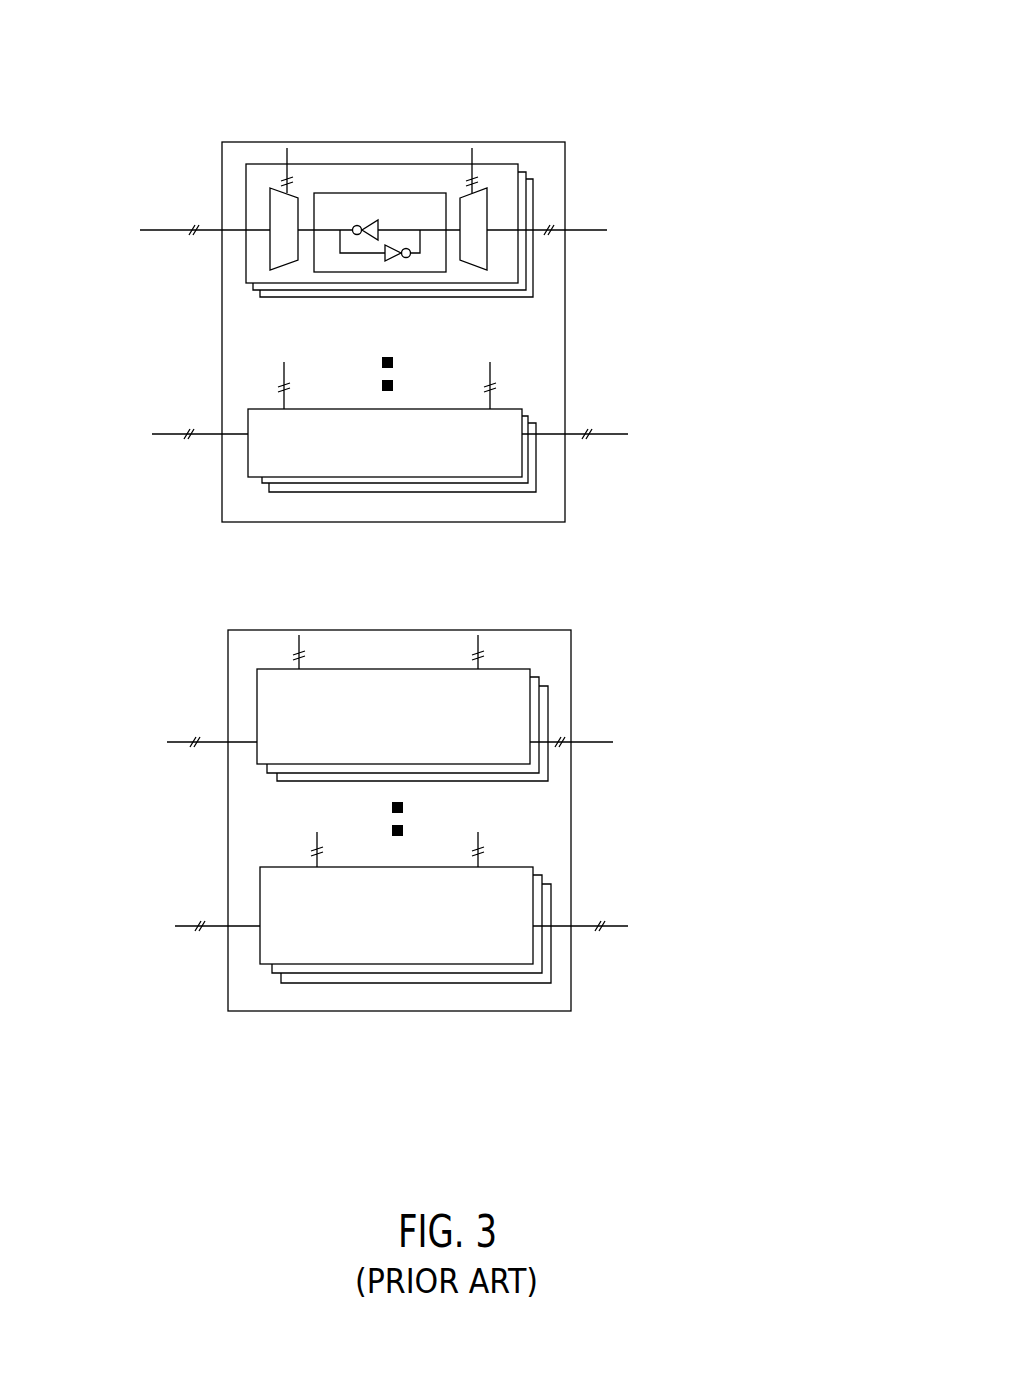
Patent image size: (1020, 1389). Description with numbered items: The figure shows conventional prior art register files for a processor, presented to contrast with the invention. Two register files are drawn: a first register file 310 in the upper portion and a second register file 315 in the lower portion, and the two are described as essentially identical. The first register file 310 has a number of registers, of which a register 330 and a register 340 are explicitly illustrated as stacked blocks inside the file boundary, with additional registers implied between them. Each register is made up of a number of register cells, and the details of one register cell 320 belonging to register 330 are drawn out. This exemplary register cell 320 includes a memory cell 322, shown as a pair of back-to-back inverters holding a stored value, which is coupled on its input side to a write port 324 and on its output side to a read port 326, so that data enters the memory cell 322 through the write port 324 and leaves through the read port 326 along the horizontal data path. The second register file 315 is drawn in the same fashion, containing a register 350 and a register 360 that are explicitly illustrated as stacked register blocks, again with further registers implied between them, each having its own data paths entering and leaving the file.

The first register file 310 is at (293, 141).
The second register file 315 is at (413, 1011).
The register cell 320 is at (246, 213).
The memory cell 322 is at (393, 193).
The write port 324 is at (270, 203).
The read port 326 is at (487, 207).
The register 330 is at (515, 315).
The register 340 is at (518, 392).
The register 350 is at (512, 645).
The register 360 is at (512, 838).